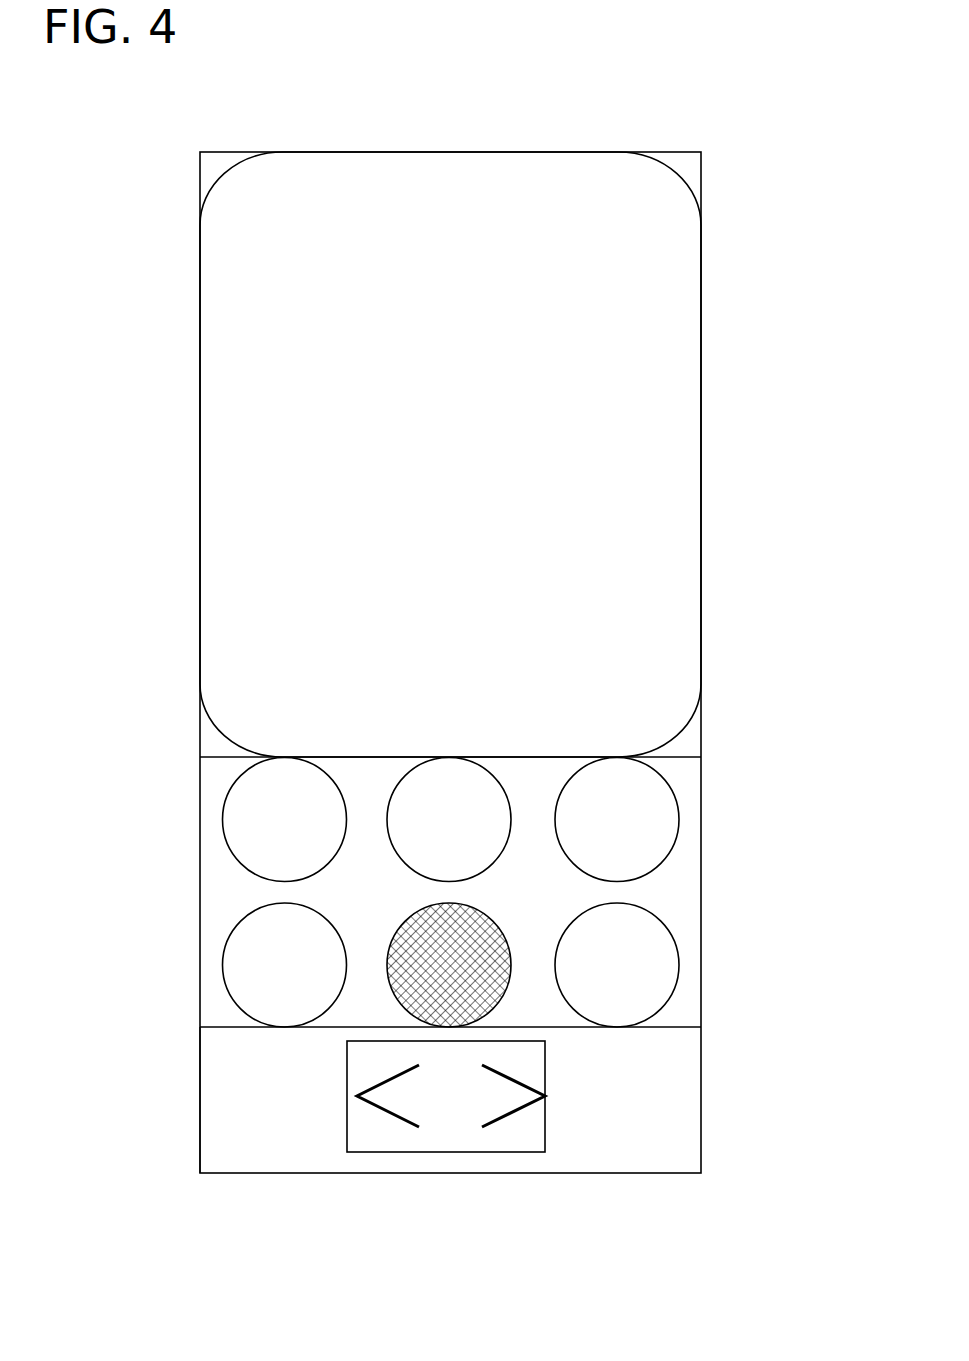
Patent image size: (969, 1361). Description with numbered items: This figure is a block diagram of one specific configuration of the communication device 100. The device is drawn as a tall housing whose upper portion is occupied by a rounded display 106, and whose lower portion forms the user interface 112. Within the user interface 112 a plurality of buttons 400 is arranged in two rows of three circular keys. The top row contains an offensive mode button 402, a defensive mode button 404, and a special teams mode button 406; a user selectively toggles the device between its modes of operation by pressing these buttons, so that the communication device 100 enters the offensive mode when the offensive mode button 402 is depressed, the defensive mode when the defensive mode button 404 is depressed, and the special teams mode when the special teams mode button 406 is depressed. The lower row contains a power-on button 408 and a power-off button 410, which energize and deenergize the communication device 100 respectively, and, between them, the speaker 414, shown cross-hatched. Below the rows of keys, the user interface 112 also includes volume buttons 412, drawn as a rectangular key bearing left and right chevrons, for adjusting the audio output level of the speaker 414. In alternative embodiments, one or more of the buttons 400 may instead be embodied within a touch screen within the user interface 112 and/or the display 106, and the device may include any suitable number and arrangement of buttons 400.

The communication device 100 is at (150, 239).
The display 106 is at (200, 437).
The buttons 400 is at (733, 880).
The offensive mode button 402 is at (222, 823).
The defensive mode button 404 is at (491, 766).
The special teams mode button 406 is at (679, 806).
The power-on button 408 is at (222, 968).
The power-off button 410 is at (679, 952).
The volume buttons 412 is at (563, 1101).
The speaker 414 is at (492, 908).
The user interface 112 is at (721, 996).